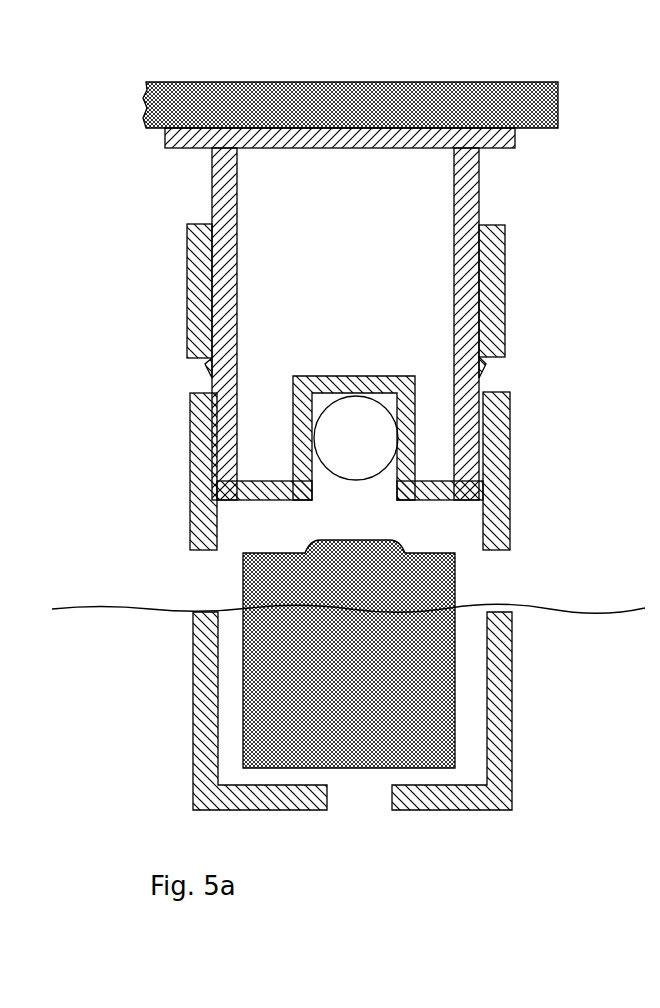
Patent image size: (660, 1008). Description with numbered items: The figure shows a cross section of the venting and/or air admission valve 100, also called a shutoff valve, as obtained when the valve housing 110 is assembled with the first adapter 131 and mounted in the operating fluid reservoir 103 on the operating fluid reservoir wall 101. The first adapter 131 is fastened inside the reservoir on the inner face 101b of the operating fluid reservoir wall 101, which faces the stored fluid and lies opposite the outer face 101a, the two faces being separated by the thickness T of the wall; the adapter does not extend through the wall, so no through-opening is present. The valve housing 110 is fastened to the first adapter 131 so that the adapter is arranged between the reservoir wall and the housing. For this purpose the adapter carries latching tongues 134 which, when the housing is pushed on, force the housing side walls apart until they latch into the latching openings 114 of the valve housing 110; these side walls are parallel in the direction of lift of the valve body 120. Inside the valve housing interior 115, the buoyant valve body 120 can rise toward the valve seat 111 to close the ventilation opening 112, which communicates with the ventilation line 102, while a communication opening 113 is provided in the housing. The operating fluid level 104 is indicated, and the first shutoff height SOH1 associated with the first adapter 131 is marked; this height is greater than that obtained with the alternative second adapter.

The venting and/or air admission valve 100 is at (493, 842).
The operating fluid reservoir wall 101 is at (140, 118).
The outer face 101a is at (478, 82).
The inner face 101b is at (534, 128).
The ventilation line 102 is at (360, 437).
The operating fluid reservoir 103 is at (187, 75).
The operating fluid level 104 is at (143, 613).
The valve housing 110 is at (195, 767).
The valve seat 111 is at (283, 488).
The ventilation opening 112 is at (340, 500).
The communication opening 113 is at (207, 595).
The latching opening 114 is at (195, 383).
The valve housing interior 115 is at (473, 707).
The valve body 120 is at (313, 657).
The first adapter 131 is at (187, 240).
The latching tongue 134 is at (207, 367).
The thickness T is at (608, 40).
The first shutoff height SOH1 is at (583, 128).